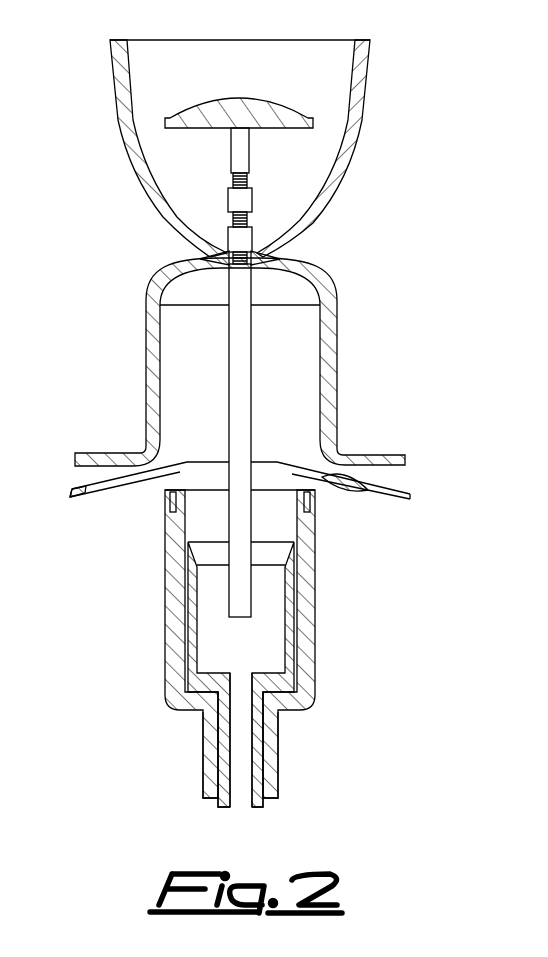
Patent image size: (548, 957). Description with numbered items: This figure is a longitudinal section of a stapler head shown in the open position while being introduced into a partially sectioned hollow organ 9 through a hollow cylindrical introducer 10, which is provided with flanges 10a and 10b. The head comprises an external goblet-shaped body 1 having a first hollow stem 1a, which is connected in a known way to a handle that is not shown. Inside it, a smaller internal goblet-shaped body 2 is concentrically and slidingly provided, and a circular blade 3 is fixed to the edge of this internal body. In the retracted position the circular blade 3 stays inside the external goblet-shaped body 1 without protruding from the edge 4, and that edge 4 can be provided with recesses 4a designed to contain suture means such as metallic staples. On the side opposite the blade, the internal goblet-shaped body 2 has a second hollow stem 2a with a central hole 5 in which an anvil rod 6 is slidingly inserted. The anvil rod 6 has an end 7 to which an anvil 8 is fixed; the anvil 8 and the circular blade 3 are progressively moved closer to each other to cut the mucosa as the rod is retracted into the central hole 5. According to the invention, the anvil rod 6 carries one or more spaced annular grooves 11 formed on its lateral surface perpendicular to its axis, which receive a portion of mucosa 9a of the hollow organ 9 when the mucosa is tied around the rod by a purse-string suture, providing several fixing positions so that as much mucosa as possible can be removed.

The external goblet-shaped body 1 is at (312, 607).
The first hollow stem 1a is at (207, 760).
The internal goblet-shaped body 2 is at (288, 662).
The second hollow stem 2a is at (220, 803).
The circular blade 3 is at (263, 545).
The edge 4 is at (317, 493).
The recesses 4a is at (173, 517).
The central hole 5 is at (238, 802).
The anvil rod 6 is at (235, 400).
The end 7 is at (240, 137).
The anvil 8 is at (241, 101).
The hollow organ 9 is at (327, 283).
The mucosa 9a is at (227, 255).
The hollow cylindrical introducer 10 is at (297, 392).
The flange 10a is at (72, 490).
The flange 10b is at (410, 490).
The annular grooves 11 is at (250, 222).